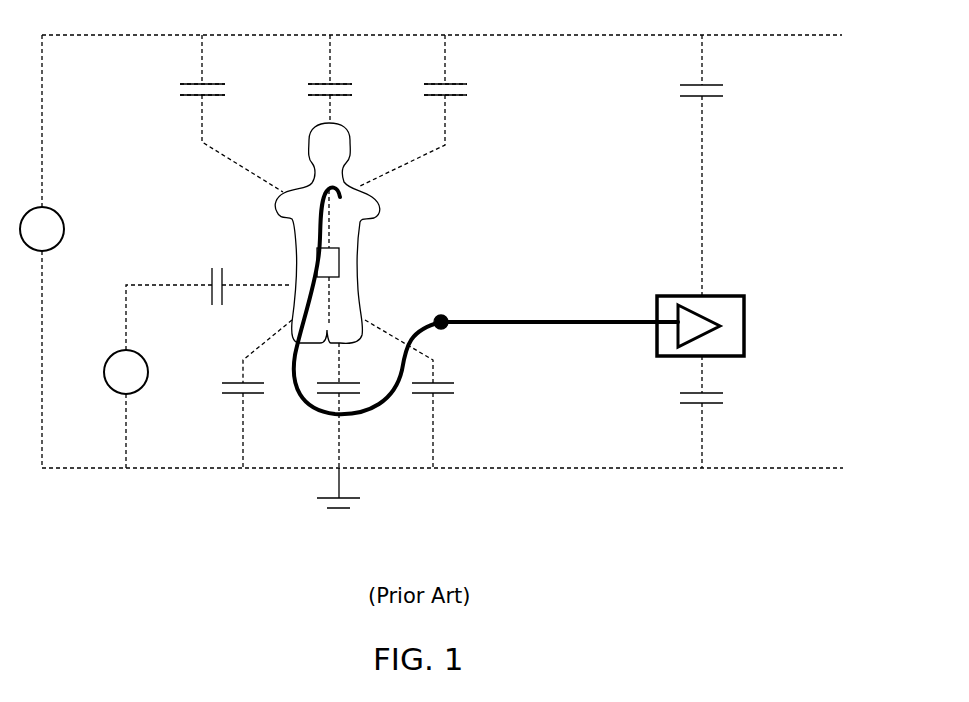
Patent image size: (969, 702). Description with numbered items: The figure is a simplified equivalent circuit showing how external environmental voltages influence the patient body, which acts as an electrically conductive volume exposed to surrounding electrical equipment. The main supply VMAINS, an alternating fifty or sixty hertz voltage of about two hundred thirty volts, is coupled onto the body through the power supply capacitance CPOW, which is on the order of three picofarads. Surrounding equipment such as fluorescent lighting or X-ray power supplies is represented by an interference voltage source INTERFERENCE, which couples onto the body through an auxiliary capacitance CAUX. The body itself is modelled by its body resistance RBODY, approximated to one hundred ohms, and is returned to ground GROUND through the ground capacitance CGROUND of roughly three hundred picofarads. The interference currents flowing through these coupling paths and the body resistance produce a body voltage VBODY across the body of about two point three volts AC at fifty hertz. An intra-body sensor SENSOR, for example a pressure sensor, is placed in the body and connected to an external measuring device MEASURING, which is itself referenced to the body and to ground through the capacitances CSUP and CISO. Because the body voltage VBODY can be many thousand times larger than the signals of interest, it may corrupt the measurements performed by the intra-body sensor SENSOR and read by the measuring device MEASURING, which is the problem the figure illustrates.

The main supply voltage VMAINS is at (72, 229).
The power supply capacitance CPOW is at (323, 113).
The supply capacitance to measuring device CSUP is at (721, 104).
The isolation capacitance to measuring device CISO is at (719, 413).
The body voltage VBODY is at (358, 233).
The body resistance RBODY is at (369, 256).
The auxiliary coupling capacitance CAUX is at (209, 298).
The interference voltage source INTERFERENCE is at (123, 380).
The ground capacitance CGROUND is at (368, 394).
The ground GROUND is at (294, 493).
The intra-body sensor SENSOR is at (486, 301).
The measuring device MEASURING is at (761, 326).